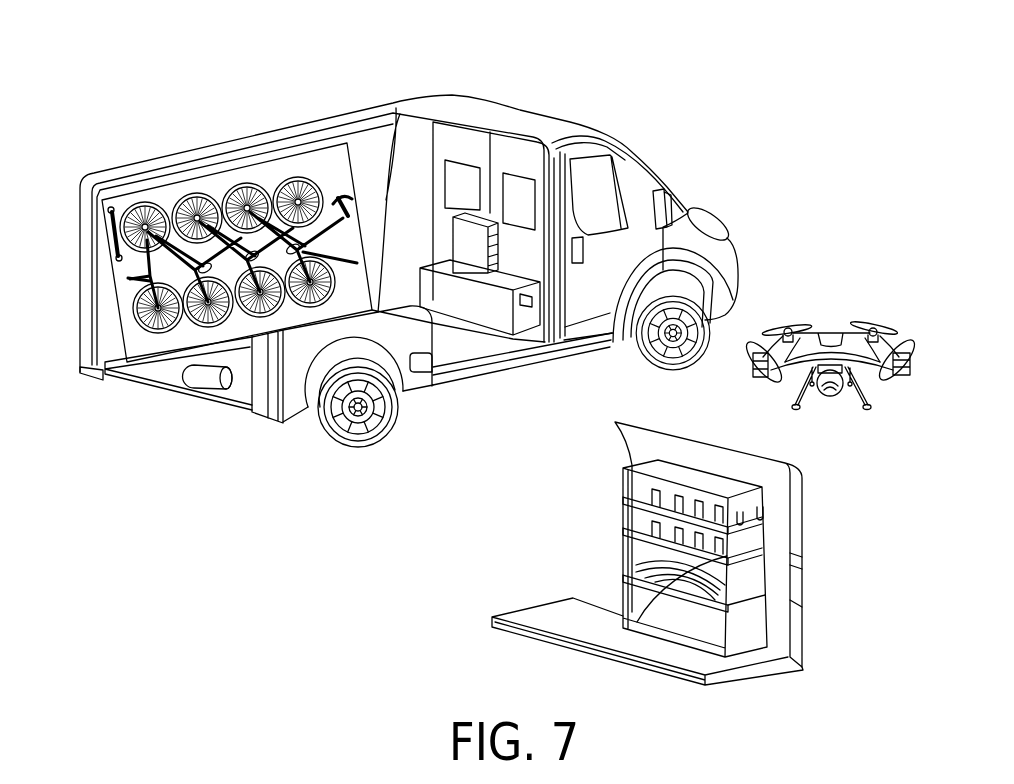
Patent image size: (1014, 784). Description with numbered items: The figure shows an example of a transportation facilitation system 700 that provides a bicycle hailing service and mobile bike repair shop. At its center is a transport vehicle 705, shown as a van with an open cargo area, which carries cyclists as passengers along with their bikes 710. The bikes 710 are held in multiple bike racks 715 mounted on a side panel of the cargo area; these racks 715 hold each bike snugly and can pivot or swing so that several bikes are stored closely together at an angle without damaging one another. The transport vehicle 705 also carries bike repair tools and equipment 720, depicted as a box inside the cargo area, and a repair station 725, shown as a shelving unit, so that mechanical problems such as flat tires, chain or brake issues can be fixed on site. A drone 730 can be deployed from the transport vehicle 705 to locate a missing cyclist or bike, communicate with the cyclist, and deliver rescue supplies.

The transportation facilitation system 700 is at (768, 65).
The transport vehicle 705 is at (532, 143).
The bikes 710 is at (173, 170).
The bike racks 715 is at (112, 232).
The bike repair tools and equipment 720 is at (510, 338).
The repair station 725 is at (793, 543).
The drone 730 is at (835, 312).